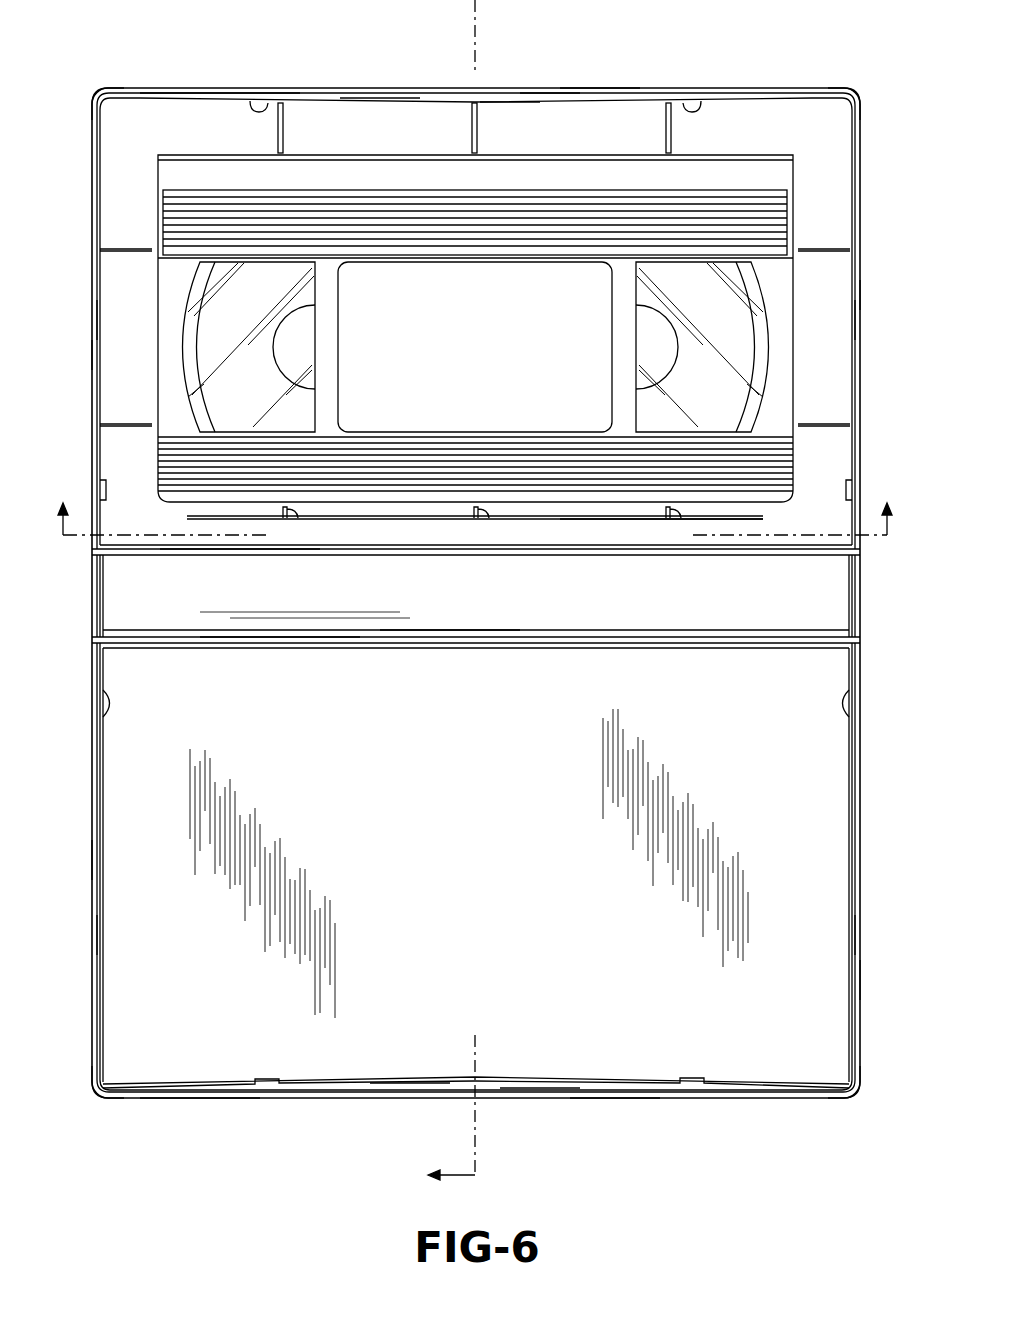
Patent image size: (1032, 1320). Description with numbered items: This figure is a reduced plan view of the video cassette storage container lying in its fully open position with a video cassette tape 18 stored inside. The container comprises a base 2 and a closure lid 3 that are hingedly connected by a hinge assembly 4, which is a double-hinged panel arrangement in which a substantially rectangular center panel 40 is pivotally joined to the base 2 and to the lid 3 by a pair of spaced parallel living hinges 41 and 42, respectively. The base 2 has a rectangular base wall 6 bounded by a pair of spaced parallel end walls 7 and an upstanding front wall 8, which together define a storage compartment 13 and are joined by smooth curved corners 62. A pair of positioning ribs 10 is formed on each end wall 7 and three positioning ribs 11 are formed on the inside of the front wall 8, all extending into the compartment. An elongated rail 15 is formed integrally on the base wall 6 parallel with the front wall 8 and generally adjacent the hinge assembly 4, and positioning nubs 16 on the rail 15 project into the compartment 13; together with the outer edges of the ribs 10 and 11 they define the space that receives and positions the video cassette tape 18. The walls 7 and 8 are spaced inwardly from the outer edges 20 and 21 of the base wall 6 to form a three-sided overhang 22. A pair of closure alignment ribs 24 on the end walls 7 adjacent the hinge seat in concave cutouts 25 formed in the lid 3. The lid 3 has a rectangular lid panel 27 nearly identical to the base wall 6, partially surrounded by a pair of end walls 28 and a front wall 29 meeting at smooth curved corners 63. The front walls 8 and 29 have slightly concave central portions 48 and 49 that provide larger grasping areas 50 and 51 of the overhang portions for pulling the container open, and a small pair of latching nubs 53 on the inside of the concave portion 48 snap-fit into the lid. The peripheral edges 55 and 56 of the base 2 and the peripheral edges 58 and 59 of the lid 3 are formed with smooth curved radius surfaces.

The base 2 is at (130, 87).
The closure lid 3 is at (334, 1099).
The hinge assembly 4 is at (129, 587).
The base wall 6 is at (808, 136).
The end walls 7 is at (880, 177).
The front wall 8 is at (760, 40).
The positioning ribs 10 is at (125, 252).
The positioning ribs 11 is at (283, 118).
The storage compartment 13 is at (378, 512).
The rail 15 is at (586, 522).
The positioning nubs 16 is at (289, 508).
The video cassette tape 18 is at (786, 367).
The outer edge 20 is at (93, 355).
The outer edge 21 is at (593, 89).
The overhang 22 is at (200, 92).
The closure alignment ribs 24 is at (112, 485).
The concave cutouts 25 is at (108, 703).
The lid panel 27 is at (463, 866).
The end walls 28 is at (93, 861).
The front wall 29 is at (196, 1094).
The center panel 40 is at (451, 601).
The living hinge 41 is at (240, 551).
The living hinge 42 is at (282, 637).
The concave central portion 48 is at (510, 102).
The concave central portion 49 is at (412, 1088).
The grasping area 50 is at (549, 94).
The grasping area 51 is at (541, 1091).
The latching nubs 53 is at (257, 108).
The peripheral edges 55 is at (96, 316).
The peripheral edge 56 is at (384, 95).
The peripheral edges 58 is at (97, 937).
The peripheral edge 59 is at (611, 1097).
The curved corners 62 is at (97, 95).
The curved corners 63 is at (97, 1092).